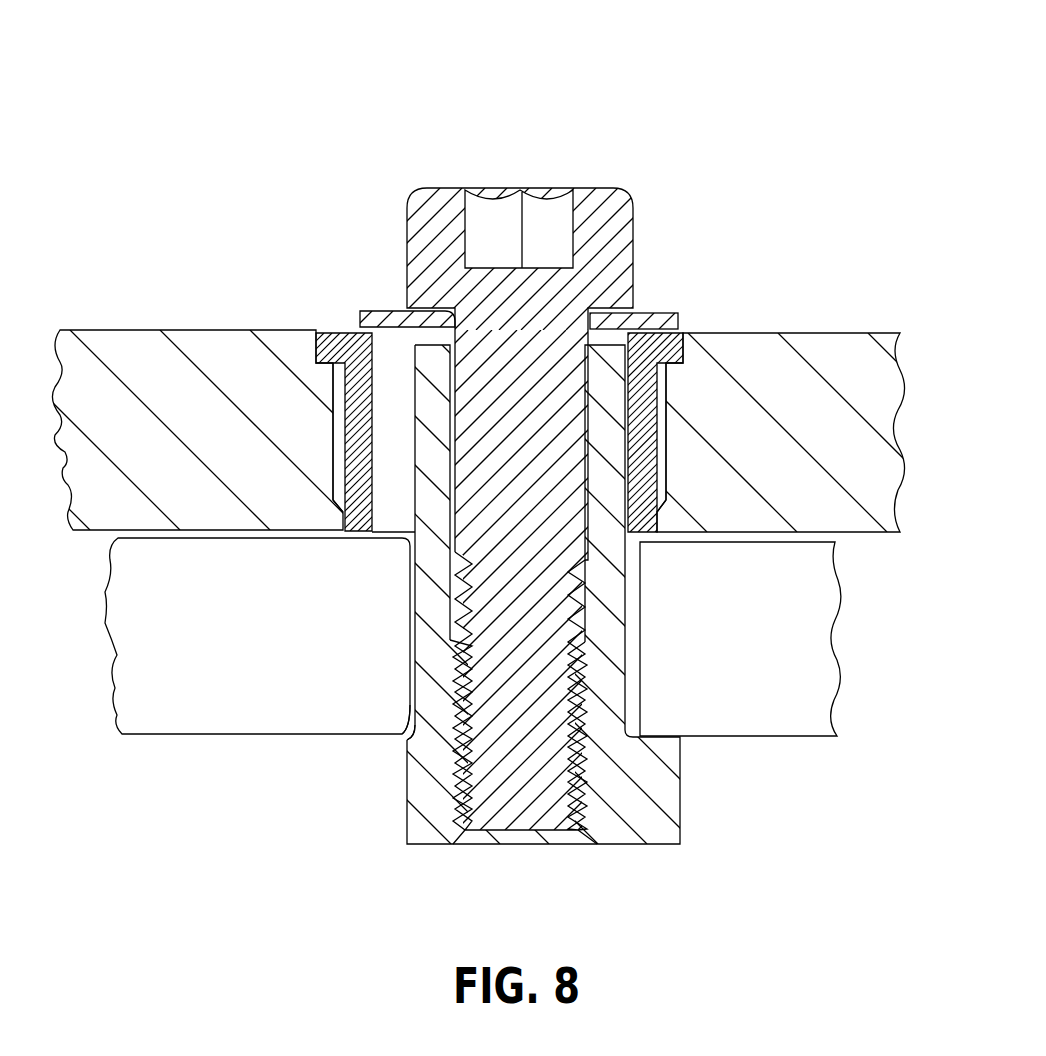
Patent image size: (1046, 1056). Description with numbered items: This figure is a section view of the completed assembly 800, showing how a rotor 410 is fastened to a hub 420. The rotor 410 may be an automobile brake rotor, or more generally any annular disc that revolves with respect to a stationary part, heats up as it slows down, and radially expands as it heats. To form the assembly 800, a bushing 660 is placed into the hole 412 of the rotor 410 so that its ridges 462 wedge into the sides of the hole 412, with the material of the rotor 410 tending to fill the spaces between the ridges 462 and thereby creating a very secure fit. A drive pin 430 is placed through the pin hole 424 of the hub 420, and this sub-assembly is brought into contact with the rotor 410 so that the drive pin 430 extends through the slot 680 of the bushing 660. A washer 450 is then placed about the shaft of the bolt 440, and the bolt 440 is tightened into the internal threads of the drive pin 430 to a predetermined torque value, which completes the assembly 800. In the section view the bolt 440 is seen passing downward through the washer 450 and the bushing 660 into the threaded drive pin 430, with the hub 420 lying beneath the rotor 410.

The assembly 800 is at (769, 94).
The rotor 410 is at (96, 329).
The hole 412 is at (669, 389).
The ridges 462 is at (333, 457).
The bushing 660 is at (315, 352).
The slot 680 is at (394, 520).
The washer 450 is at (668, 312).
The hub 420 is at (207, 709).
The pin hole 424 is at (402, 738).
The drive pin 430 is at (626, 685).
The bolt 440 is at (634, 212).